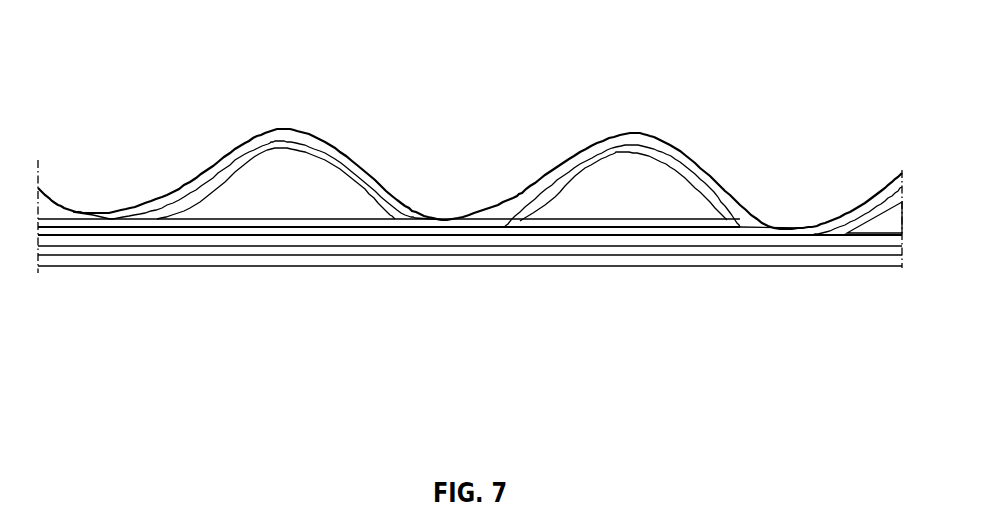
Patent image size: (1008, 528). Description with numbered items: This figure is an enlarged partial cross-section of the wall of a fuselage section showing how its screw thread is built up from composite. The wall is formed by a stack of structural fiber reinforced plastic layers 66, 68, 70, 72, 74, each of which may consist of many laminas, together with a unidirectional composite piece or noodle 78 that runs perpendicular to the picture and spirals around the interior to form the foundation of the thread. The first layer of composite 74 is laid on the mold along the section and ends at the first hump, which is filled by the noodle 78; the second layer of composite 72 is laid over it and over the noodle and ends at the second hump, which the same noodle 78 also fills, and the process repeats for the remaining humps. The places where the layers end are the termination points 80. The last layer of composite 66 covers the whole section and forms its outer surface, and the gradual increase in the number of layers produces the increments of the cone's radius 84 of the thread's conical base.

The last layer of composite 66 is at (278, 257).
The structural composite layer 68 is at (231, 248).
The structural composite layer 70 is at (176, 238).
The second layer of composite 72 is at (119, 230).
The first layer of composite 74 is at (59, 222).
The noodle 78 is at (260, 188).
The termination points 80 is at (74, 210).
The increments of the cone's radius 84 is at (629, 187).